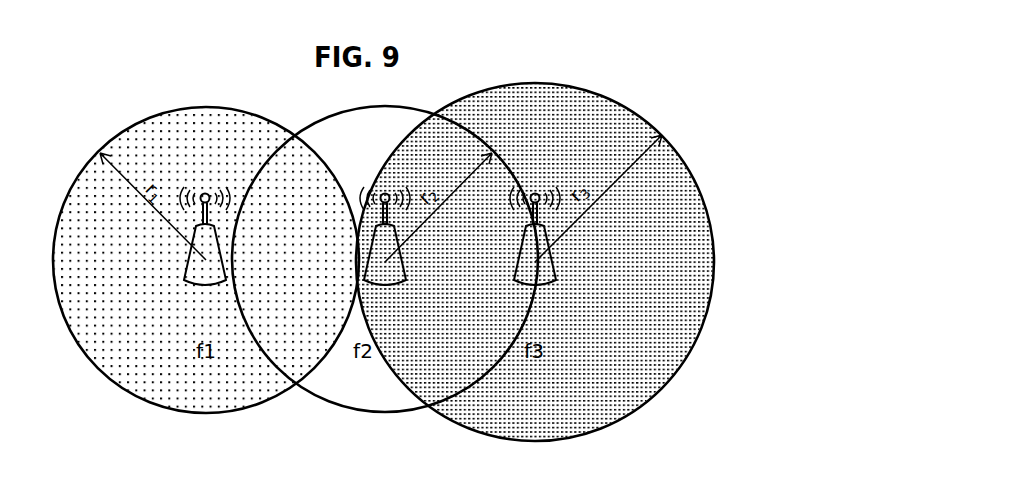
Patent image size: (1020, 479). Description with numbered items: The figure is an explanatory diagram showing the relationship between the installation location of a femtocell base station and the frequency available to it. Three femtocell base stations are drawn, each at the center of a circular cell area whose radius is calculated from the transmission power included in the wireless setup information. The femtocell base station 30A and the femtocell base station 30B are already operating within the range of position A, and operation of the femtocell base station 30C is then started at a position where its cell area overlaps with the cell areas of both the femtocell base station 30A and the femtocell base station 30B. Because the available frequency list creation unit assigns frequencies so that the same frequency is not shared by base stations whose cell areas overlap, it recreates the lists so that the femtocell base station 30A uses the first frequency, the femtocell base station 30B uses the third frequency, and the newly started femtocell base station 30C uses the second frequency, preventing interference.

The femtocell base station 30A is at (188, 271).
The femtocell base station 30B is at (552, 272).
The femtocell base station 30C is at (404, 272).